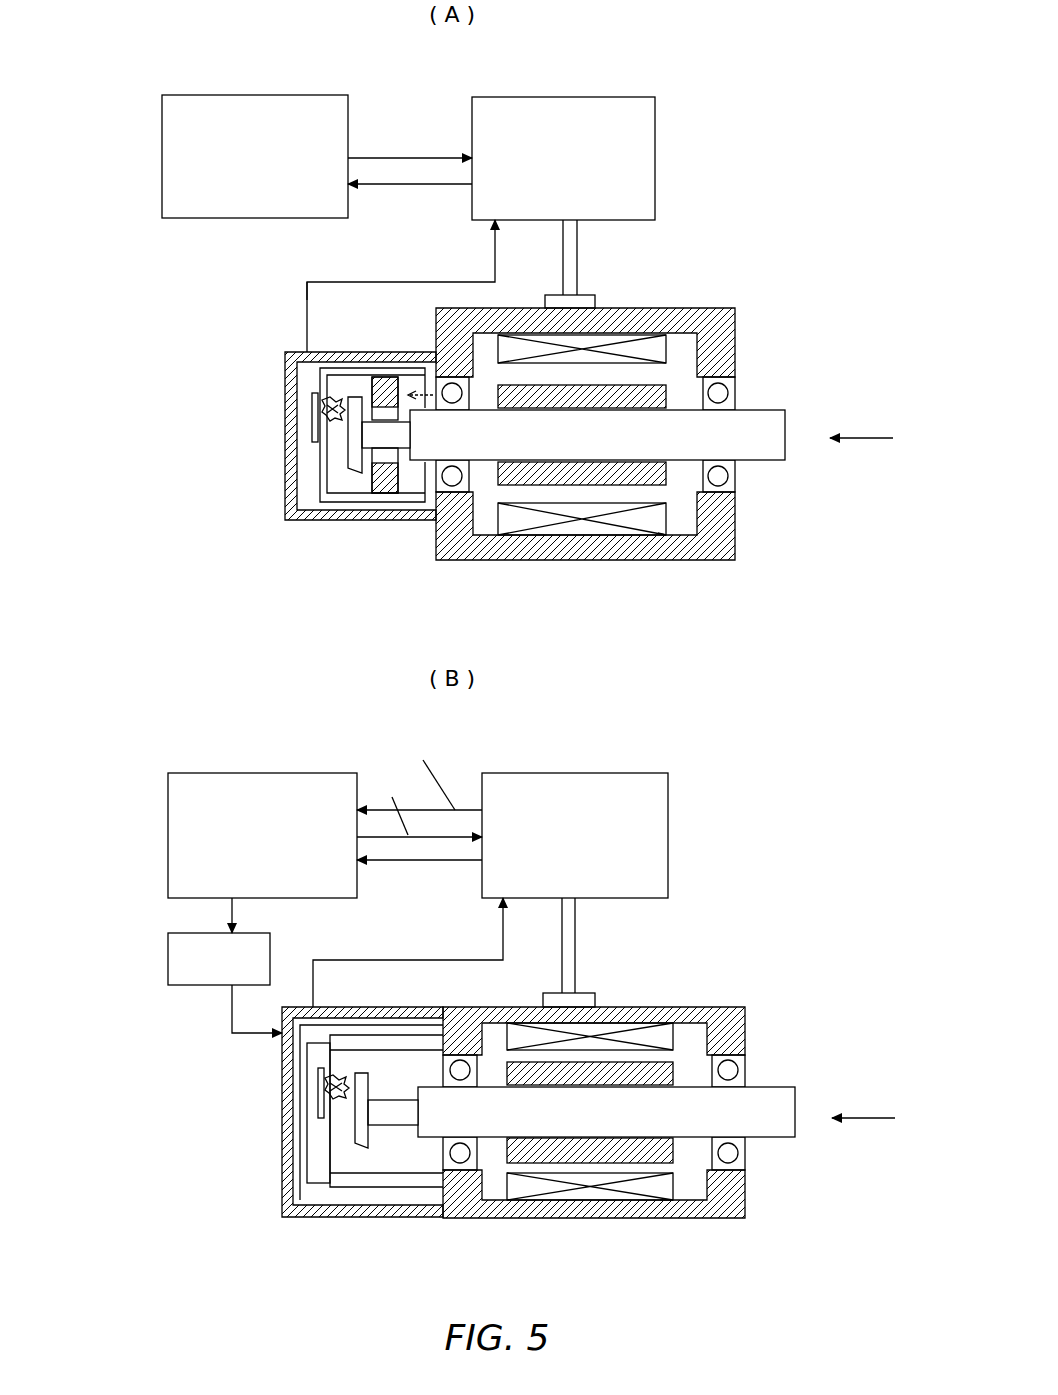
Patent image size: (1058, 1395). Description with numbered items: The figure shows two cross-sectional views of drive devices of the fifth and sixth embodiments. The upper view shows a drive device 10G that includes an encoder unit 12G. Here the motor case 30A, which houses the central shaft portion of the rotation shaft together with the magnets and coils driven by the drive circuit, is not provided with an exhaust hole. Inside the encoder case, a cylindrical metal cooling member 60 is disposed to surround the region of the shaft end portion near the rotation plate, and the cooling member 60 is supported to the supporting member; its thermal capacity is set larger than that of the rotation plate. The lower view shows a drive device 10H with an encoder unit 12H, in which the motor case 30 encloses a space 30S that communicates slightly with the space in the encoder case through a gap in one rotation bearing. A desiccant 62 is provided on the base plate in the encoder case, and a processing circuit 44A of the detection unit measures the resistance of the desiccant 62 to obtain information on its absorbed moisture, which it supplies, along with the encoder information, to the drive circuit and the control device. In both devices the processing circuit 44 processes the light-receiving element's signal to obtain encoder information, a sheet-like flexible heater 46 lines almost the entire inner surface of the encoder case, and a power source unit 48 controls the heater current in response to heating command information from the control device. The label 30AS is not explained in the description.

The drive device 10G is at (822, 208).
The drive device 10H is at (830, 888).
The encoder unit 12G is at (197, 388).
The encoder unit 12H is at (180, 1130).
The motor case 30 is at (600, 1006).
The motor case 30A is at (643, 345).
The signal line 30AS is at (455, 312).
The space 30S is at (477, 1017).
The processing circuit 44 is at (313, 438).
The processing circuit 44A is at (312, 1105).
The heater 46 is at (320, 1095).
The power source unit 48 is at (168, 955).
The cooling member 60 is at (395, 512).
The desiccant 62 is at (335, 1092).